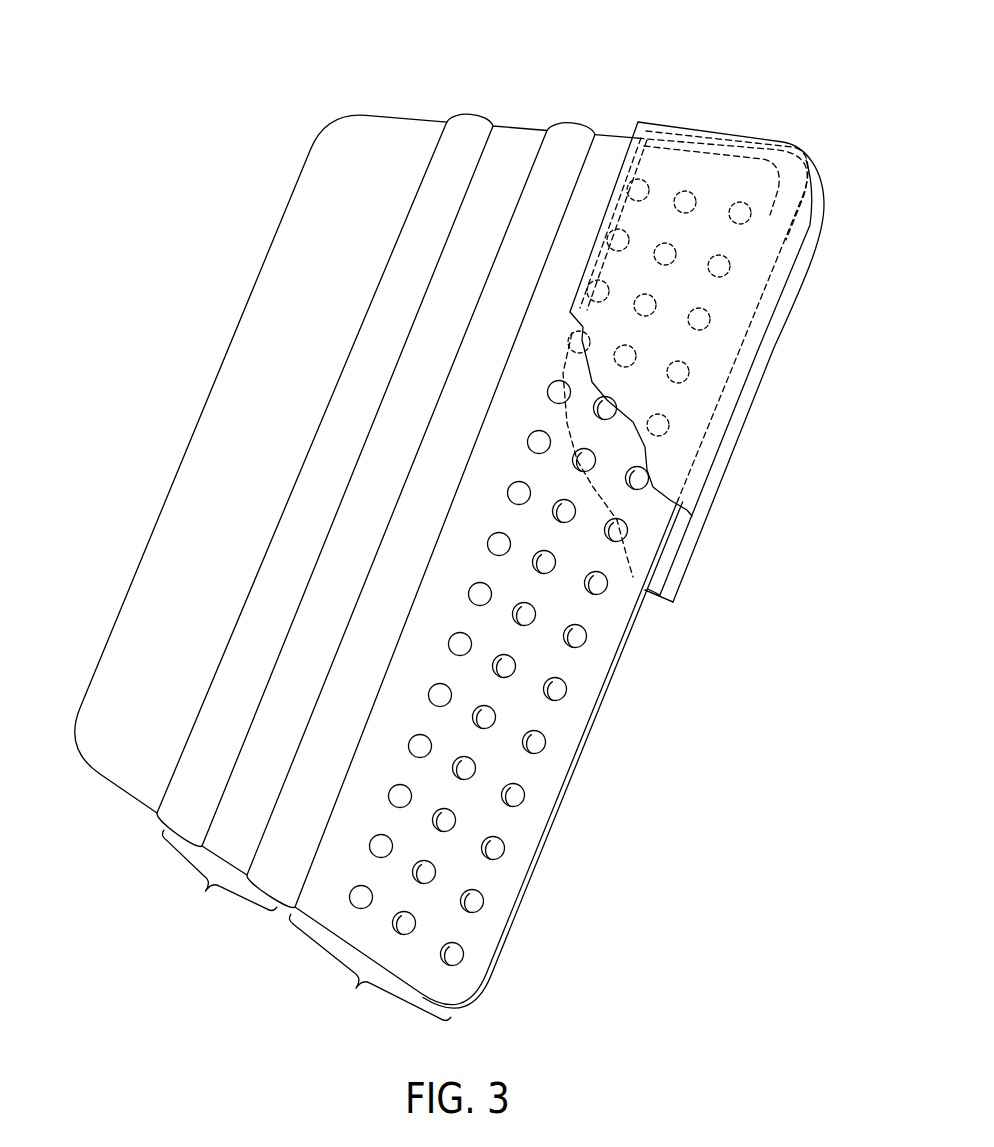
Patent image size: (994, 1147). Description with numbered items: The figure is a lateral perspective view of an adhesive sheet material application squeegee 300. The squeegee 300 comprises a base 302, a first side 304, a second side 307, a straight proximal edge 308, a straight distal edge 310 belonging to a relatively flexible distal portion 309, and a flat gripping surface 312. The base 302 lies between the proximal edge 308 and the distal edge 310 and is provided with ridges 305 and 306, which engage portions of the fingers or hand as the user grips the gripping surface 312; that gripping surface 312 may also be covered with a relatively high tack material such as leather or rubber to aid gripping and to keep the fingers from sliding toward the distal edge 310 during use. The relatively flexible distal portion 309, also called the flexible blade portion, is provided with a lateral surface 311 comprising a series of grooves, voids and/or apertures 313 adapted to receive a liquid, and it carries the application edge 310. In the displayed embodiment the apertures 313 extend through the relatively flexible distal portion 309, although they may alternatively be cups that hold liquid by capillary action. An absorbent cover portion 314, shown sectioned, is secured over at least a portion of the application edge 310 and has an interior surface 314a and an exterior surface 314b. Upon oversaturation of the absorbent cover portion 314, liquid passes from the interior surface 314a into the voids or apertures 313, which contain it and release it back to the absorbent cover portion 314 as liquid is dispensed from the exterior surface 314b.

The adhesive sheet material application squeegee 300 is at (643, 88).
The base 302 is at (206, 891).
The first side 304 is at (577, 98).
The ridge 305 is at (465, 123).
The ridge 306 is at (567, 128).
The second side 307 is at (119, 802).
The proximal edge 308 is at (258, 279).
The relatively flexible distal portion 309 is at (356, 988).
The distal edge 310 is at (572, 770).
The lateral surface 311 is at (495, 488).
The gripping surface 312 is at (268, 371).
The apertures 313 is at (578, 635).
The absorbent cover portion 314 is at (810, 187).
The interior surface 314a is at (678, 550).
The exterior surface 314b is at (782, 264).